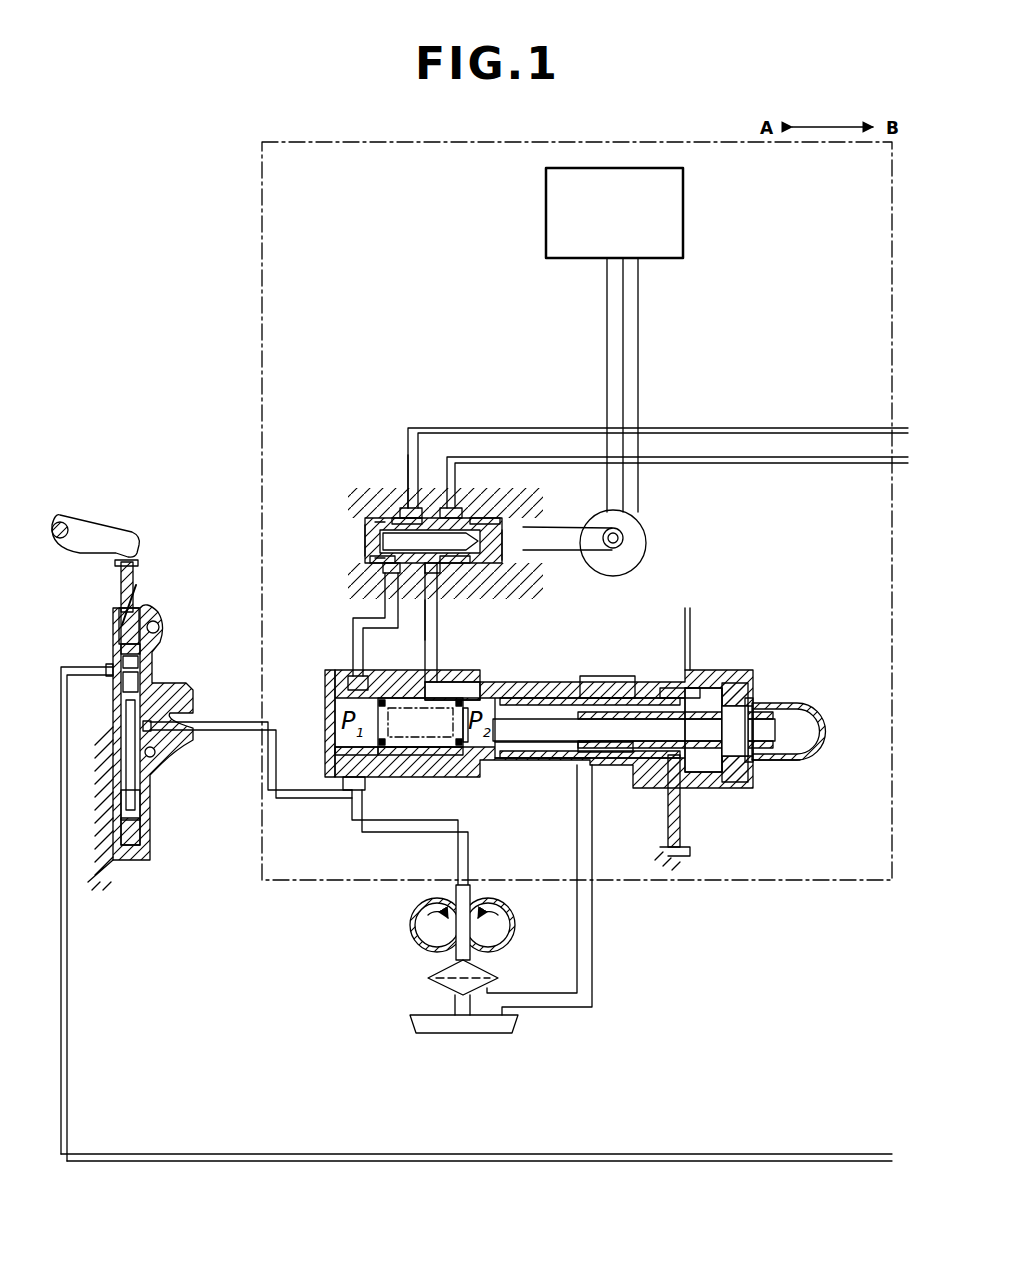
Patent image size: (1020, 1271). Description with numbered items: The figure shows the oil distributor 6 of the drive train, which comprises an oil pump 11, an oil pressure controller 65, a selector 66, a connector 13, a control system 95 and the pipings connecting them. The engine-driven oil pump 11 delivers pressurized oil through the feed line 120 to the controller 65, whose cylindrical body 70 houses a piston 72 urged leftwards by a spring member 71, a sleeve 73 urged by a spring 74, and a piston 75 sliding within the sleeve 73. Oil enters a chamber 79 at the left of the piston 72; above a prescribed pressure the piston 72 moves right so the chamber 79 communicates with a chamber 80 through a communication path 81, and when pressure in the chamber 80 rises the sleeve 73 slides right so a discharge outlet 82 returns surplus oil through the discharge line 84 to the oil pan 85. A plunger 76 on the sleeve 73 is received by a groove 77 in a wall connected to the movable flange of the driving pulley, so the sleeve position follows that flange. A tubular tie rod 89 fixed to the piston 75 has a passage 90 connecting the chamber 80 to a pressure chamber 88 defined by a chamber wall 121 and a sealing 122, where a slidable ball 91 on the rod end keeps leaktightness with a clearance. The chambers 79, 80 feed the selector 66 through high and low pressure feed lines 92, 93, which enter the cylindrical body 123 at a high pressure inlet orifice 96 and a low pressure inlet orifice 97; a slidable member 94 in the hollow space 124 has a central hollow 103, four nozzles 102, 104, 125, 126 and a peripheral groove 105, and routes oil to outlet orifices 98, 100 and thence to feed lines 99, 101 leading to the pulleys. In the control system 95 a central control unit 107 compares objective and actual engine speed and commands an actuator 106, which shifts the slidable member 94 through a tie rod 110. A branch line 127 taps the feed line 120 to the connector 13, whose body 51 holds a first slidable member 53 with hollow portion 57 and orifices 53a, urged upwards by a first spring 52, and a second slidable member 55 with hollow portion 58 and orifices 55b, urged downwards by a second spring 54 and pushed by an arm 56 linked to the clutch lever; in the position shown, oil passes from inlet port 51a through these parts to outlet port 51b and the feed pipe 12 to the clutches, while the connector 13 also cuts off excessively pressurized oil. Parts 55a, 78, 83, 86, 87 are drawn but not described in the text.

The oil distributor 6 is at (330, 142).
The oil pump 11 is at (428, 968).
The feed pipe 12 is at (666, 1163).
The connector 13 is at (165, 540).
The body 51 is at (160, 642).
The inlet port 51a is at (185, 727).
The outlet port 51b is at (106, 666).
The first spring 52 is at (140, 832).
The first slidable member 53 is at (130, 862).
The orifices 53a is at (140, 750).
The second spring 54 is at (119, 610).
The second slidable member 55 is at (119, 638).
The push rod 55a is at (140, 580).
The orifices 55b is at (138, 662).
The arm 56 is at (97, 516).
The hollow portion 57 is at (140, 800).
The hollow portion 58 is at (150, 692).
The oil pressure controller 65 is at (316, 670).
The selector 66 is at (350, 425).
The cylindrical body 70 is at (530, 770).
The spring member 71 is at (420, 722).
The piston 72 is at (432, 755).
The sleeve 73 is at (518, 698).
The spring 74 is at (703, 690).
The piston 75 is at (590, 698).
The plunger 76 is at (680, 810).
The groove 77 is at (690, 844).
The port 78 is at (345, 790).
The chamber 79 is at (325, 720).
The chamber 80 is at (462, 748).
The communication path 81 is at (395, 755).
The discharge outlet 82 is at (603, 760).
The rod passage 83 is at (540, 760).
The discharge line 84 is at (592, 862).
The oil pan 85 is at (500, 1033).
The port 86 is at (356, 676).
The port 87 is at (432, 690).
The pressure chamber 88 is at (795, 706).
The tubular tie rod 89 is at (620, 698).
The passage 90 is at (668, 698).
The slidable ball 91 is at (757, 700).
The feed line 92 is at (385, 630).
The feed line 93 is at (438, 640).
The slidable member 94 is at (490, 518).
The control system 95 is at (672, 392).
The high pressure inlet orifice 96 is at (378, 563).
The low pressure inlet orifice 97 is at (440, 575).
The outlet orifice 98 is at (400, 518).
The feed line 99 is at (437, 428).
The outlet orifice 100 is at (415, 508).
The feed line 101 is at (518, 457).
The nozzle 102 is at (375, 522).
The hollow 103 is at (383, 540).
The nozzle 104 is at (455, 508).
The peripheral groove 105 is at (408, 508).
The actuator 106 is at (645, 555).
The central control unit 107 is at (546, 212).
The tie rod 110 is at (575, 548).
The feed line 120 is at (415, 832).
The chamber wall 121 is at (810, 762).
The sealing 122 is at (740, 690).
The cylindrical body 123 is at (505, 565).
The cylindrical hollow space 124 is at (365, 550).
The nozzle 125 is at (425, 605).
The nozzle 126 is at (455, 563).
The branch line 127 is at (290, 798).